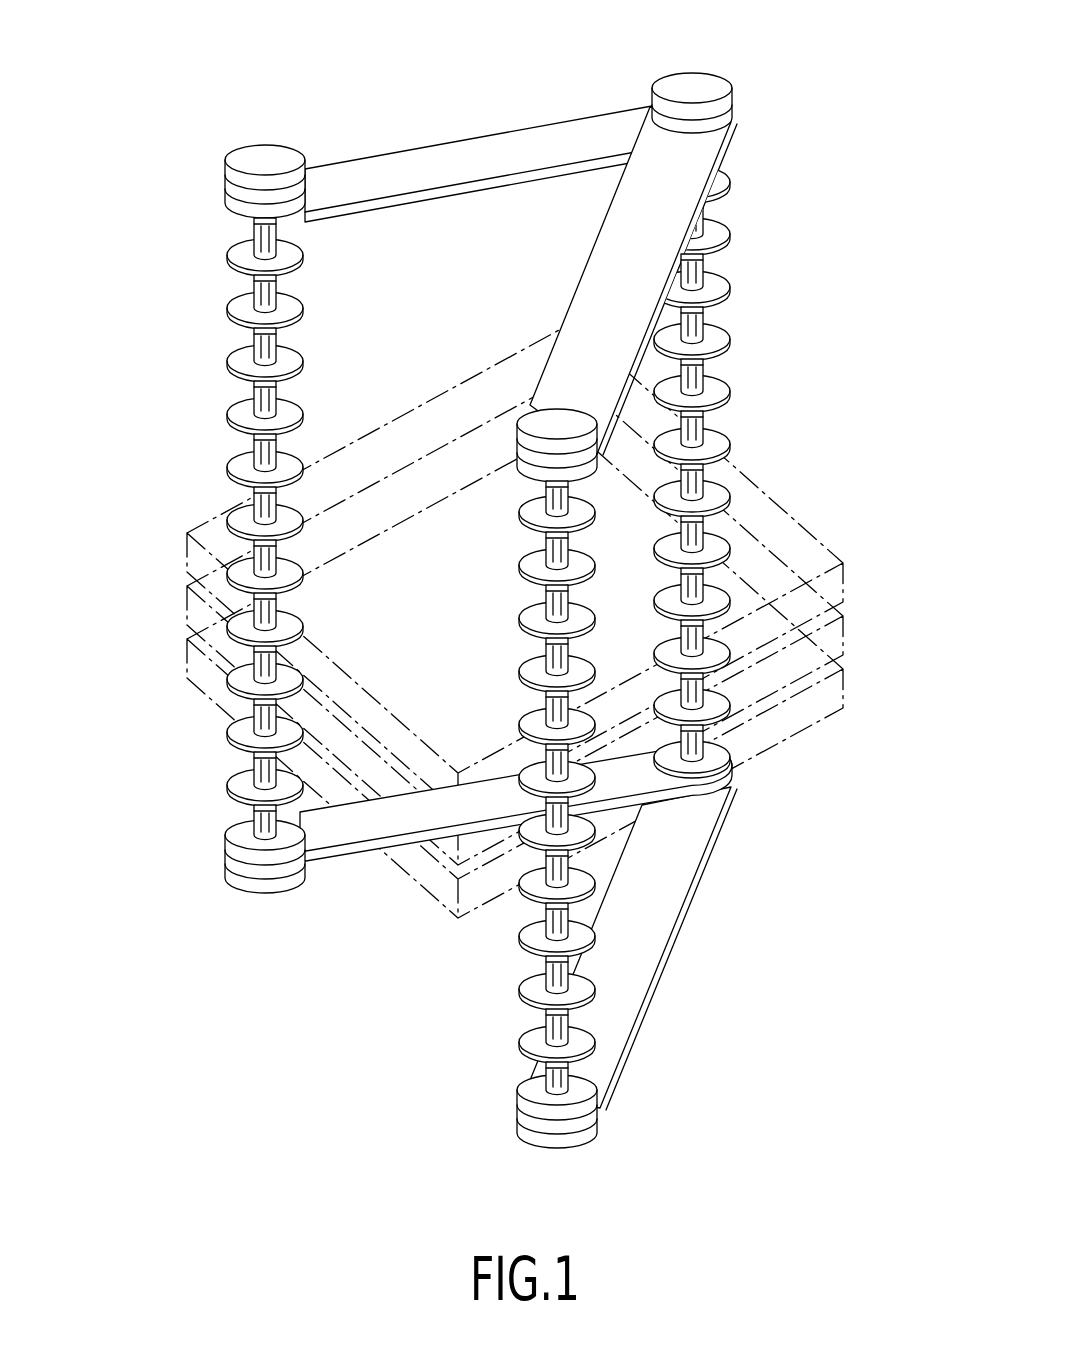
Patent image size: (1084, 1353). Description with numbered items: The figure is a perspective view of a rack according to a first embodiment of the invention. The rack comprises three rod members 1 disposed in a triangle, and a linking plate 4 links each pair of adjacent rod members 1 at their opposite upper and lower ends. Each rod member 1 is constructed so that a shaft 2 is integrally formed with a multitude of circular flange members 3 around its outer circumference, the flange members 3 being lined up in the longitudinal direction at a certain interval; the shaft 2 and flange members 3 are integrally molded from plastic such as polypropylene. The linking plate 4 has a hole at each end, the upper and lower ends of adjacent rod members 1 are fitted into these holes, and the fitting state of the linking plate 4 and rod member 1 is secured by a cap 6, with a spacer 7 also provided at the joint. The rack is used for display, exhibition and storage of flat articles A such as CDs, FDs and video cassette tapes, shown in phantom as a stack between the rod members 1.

The rod member 1 is at (497, 610).
The shaft 2 is at (704, 290).
The circular flange member 3 is at (236, 318).
The linking plate 4 is at (453, 147).
The cap 6 is at (268, 152).
The spacer 7 is at (232, 202).
The flat articles A is at (846, 654).